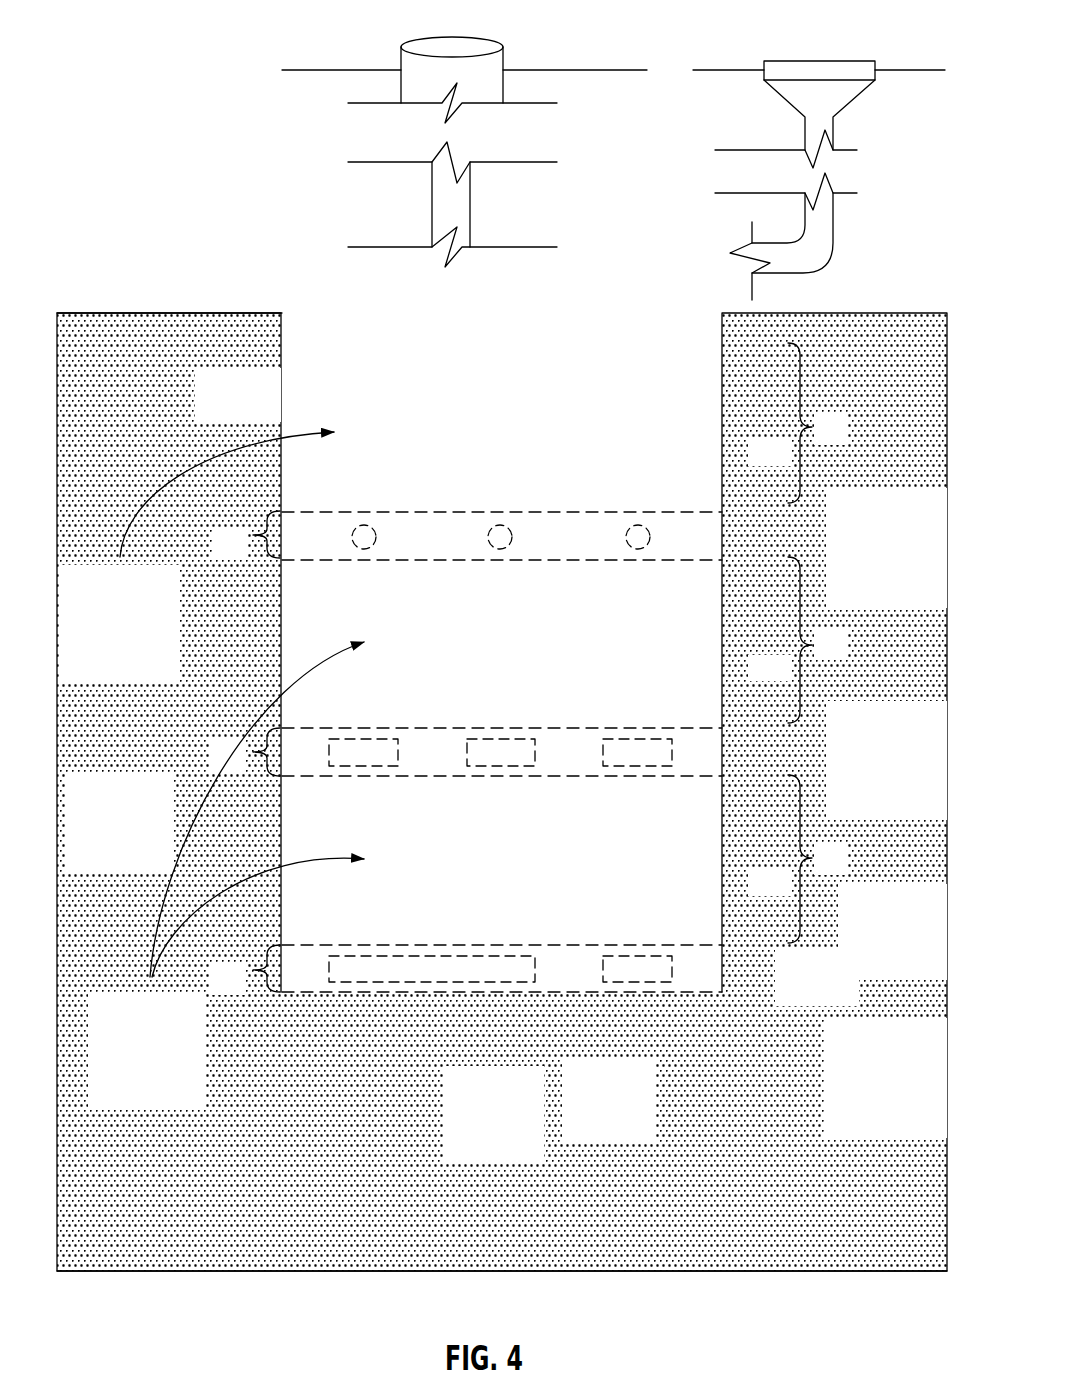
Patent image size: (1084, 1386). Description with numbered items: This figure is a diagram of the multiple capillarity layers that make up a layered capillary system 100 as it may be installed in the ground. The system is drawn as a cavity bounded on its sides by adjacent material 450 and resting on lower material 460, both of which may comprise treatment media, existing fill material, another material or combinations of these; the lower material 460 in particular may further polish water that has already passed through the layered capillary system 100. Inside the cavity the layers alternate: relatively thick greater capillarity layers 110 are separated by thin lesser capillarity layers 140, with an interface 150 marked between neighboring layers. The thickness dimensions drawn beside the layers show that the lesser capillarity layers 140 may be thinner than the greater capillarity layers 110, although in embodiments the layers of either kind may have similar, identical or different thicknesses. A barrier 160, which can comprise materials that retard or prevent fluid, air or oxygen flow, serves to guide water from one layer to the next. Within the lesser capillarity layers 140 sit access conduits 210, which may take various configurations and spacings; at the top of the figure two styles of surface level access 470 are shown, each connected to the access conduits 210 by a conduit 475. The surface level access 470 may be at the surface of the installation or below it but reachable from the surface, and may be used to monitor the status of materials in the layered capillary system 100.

The layered capillary system 100 is at (136, 91).
The greater capillarity layers 110 is at (213, 771).
The lesser capillarity layers 140 is at (695, 560).
The interface 150 is at (682, 512).
The barrier 160 is at (281, 396).
The access conduit 210 is at (605, 1050).
The adjacent material 450 is at (913, 977).
The lower material 460 is at (516, 1160).
The surface level access 470 is at (542, 90).
The conduit 475 is at (470, 200).